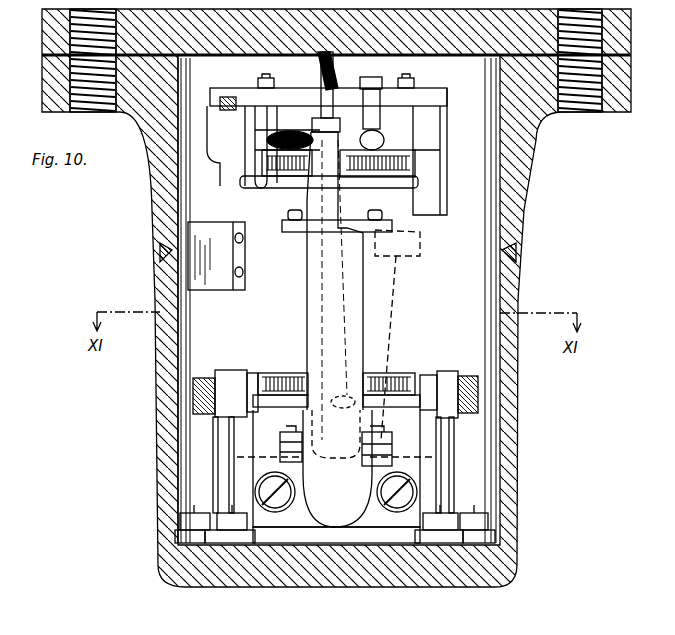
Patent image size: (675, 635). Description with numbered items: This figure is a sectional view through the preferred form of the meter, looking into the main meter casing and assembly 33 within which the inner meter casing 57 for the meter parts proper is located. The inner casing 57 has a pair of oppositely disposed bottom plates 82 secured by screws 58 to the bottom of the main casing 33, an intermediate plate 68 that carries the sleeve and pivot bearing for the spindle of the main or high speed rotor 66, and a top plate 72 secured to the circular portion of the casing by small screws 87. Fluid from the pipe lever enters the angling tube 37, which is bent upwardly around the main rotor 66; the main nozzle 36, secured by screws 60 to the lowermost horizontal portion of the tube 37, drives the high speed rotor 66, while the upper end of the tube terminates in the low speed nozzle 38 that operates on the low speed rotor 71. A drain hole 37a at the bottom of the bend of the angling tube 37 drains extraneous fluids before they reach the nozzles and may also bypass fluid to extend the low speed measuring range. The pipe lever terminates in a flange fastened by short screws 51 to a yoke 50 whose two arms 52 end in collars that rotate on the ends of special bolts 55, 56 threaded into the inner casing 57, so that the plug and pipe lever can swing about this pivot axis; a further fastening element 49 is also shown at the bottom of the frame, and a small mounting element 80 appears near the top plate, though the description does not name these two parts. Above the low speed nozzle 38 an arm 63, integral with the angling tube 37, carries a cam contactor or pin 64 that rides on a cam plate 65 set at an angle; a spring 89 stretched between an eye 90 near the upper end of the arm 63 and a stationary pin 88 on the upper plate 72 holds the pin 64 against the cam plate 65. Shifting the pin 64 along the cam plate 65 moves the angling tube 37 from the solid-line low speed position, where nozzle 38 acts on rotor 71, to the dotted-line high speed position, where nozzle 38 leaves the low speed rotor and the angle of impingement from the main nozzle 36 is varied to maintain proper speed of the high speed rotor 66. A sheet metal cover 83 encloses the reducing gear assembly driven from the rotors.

The meter casing and assembly 33 is at (563, 233).
The main nozzle 36 is at (338, 397).
The angling tube 37 is at (325, 263).
The drain hole 37a is at (337, 478).
The low speed nozzle 38 is at (386, 205).
The screw 49 is at (305, 508).
The yoke 50 is at (375, 520).
The short screws 51 is at (285, 520).
The arms 52 is at (243, 464).
The special bolt 55 is at (478, 392).
The special bolt 56 is at (203, 390).
The inner meter casing 57 is at (230, 347).
The screws 58 is at (193, 513).
The screws 60 is at (291, 438).
The arm 63 is at (380, 153).
The cam contactor or pin 64 is at (326, 66).
The cam plate 65 is at (312, 100).
The main or high speed rotor 66 is at (266, 376).
The intermediate plate 68 is at (391, 409).
The low speed rotor 71 is at (262, 176).
The top plate 72 is at (404, 118).
The bracket 80 is at (226, 99).
The bottom plates 82 is at (180, 537).
The sheet metal cover 83 is at (213, 288).
The small screws 87 is at (410, 90).
The stationary pin 88 is at (276, 81).
The spring 89 is at (268, 155).
The eye 90 is at (364, 126).